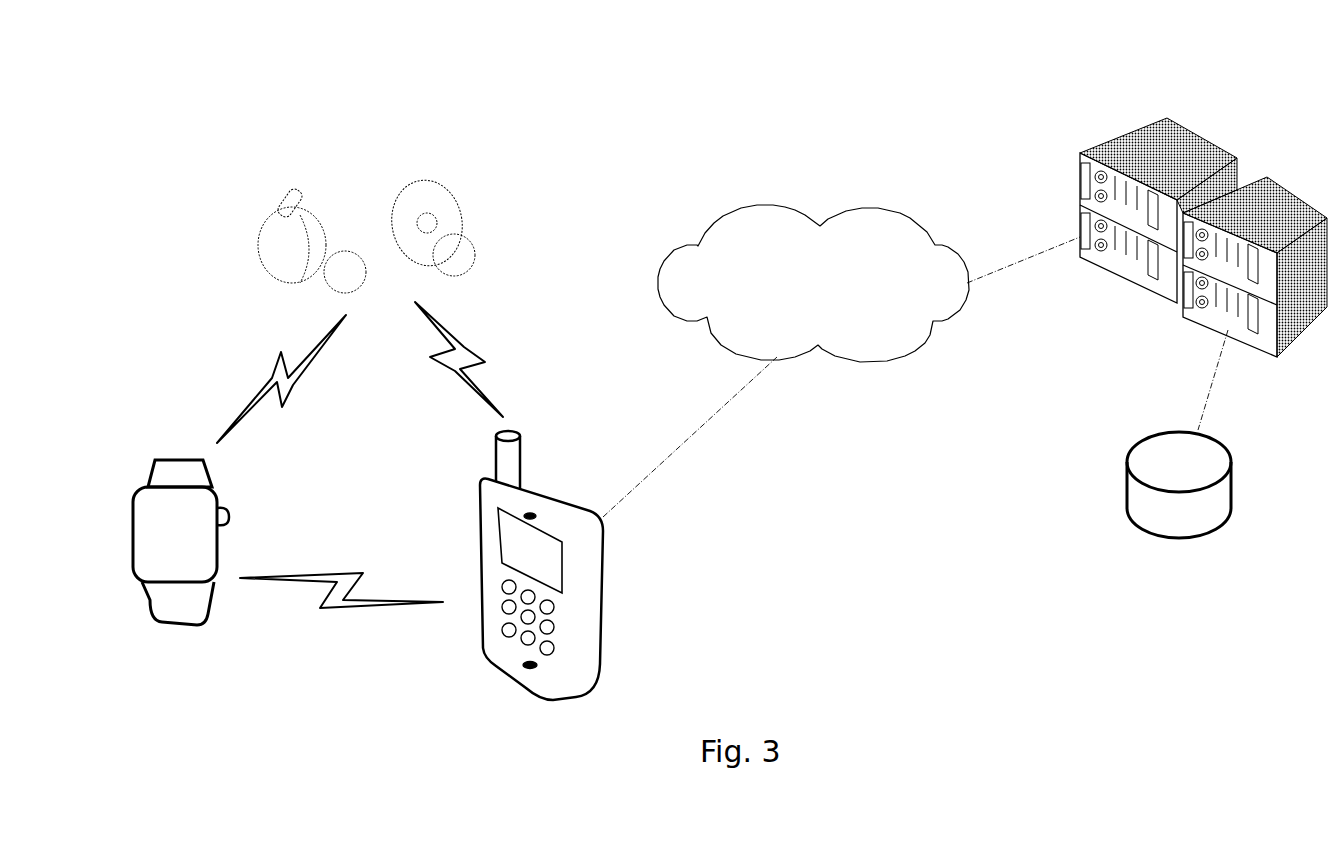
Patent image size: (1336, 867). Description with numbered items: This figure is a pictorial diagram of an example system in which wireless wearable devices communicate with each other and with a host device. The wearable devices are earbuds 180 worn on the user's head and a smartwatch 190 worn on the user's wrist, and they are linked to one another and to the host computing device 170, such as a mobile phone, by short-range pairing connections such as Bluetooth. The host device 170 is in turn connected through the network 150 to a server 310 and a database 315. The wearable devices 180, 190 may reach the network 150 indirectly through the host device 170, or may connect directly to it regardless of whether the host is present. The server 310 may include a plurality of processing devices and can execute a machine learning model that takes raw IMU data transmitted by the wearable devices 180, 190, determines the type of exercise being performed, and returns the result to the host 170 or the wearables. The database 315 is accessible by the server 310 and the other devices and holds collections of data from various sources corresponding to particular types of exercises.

The network 150 is at (813, 283).
The host computing device 170 is at (580, 500).
The earbuds 180 is at (276, 164).
The smartwatch 190 is at (132, 498).
The server 310 is at (1143, 118).
The database 315 is at (1232, 510).